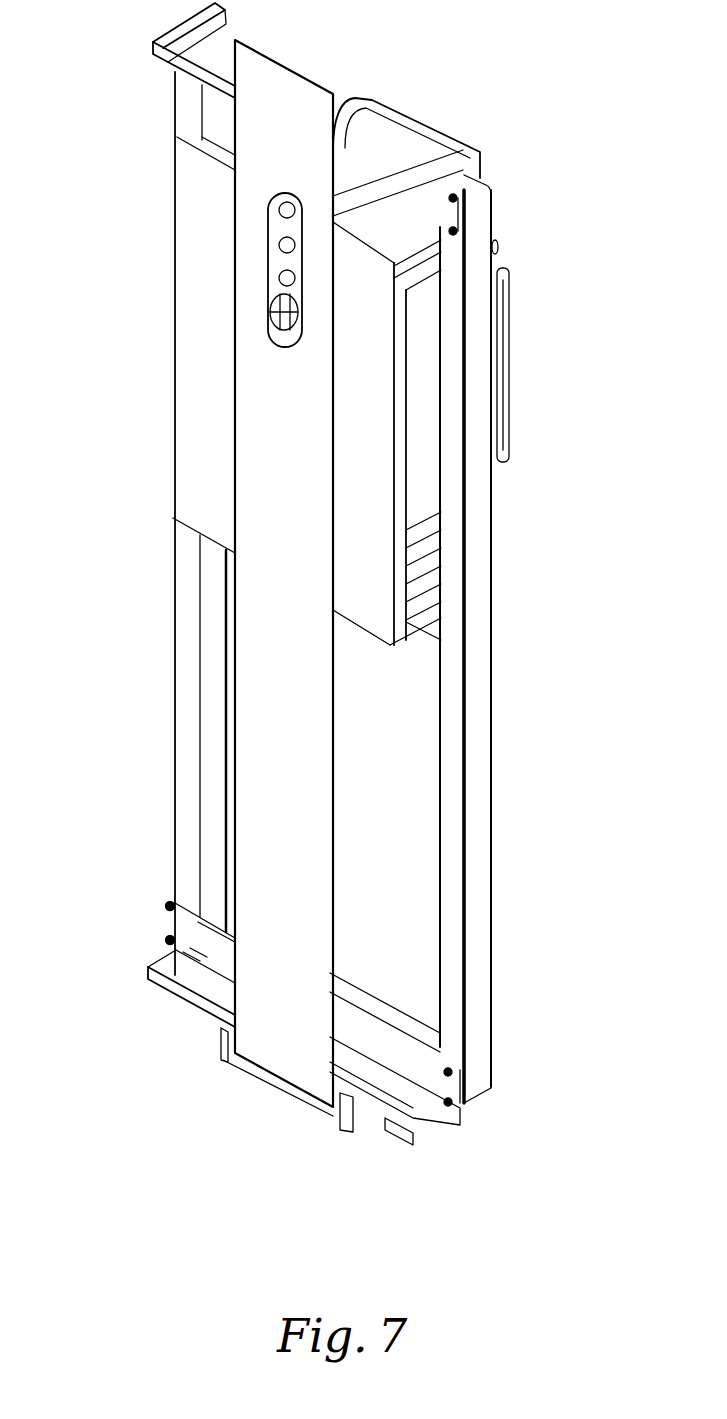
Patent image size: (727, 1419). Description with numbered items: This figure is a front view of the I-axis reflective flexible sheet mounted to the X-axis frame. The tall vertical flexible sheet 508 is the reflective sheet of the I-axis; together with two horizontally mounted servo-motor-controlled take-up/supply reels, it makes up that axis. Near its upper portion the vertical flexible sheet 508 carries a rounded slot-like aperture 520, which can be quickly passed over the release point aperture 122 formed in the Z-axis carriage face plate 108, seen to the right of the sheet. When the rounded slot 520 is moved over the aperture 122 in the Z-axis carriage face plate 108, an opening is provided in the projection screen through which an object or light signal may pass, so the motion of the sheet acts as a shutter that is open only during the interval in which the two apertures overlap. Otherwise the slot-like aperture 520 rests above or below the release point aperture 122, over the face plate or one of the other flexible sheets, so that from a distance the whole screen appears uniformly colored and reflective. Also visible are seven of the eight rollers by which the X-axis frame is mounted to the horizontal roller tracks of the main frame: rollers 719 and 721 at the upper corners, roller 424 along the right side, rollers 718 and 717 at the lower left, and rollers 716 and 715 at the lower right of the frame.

The Z-axis carriage face plate 108 is at (380, 476).
The release point aperture 122 is at (268, 315).
The roller 424 is at (498, 250).
The vertical flexible sheet 508 is at (332, 820).
The rounded slot-like aperture 520 is at (283, 352).
The roller 715 is at (452, 1105).
The roller 716 is at (460, 1095).
The roller 717 is at (166, 940).
The roller 718 is at (169, 904).
The roller 719 is at (170, 70).
The roller 721 is at (460, 207).